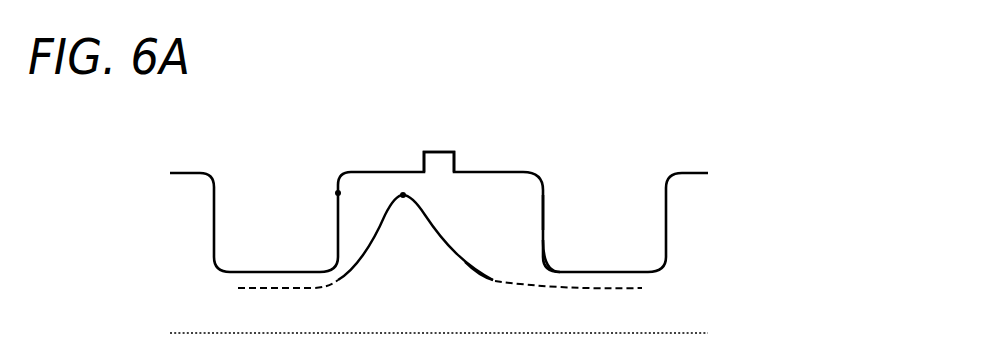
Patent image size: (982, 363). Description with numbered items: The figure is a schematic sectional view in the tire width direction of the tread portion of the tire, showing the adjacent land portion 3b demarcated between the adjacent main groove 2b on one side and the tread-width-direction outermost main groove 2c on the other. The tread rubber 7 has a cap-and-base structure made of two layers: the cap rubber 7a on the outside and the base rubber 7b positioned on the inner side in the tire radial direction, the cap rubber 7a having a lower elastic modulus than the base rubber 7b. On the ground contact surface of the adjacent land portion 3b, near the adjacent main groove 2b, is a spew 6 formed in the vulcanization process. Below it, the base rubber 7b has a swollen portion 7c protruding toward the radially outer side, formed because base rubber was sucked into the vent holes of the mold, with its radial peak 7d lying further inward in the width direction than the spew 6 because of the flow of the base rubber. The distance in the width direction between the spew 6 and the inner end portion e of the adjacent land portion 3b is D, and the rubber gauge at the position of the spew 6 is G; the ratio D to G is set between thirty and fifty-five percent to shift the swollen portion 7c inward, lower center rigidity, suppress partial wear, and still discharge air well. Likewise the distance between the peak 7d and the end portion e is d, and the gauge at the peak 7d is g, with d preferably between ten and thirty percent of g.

The adjacent main groove 2b is at (268, 200).
The tread-width-direction outermost main groove 2c is at (633, 200).
The adjacent land portion 3b is at (516, 185).
The spew 6 is at (440, 151).
The tread rubber 7 is at (600, 183).
The cap rubber 7a is at (523, 216).
The base rubber 7b is at (517, 282).
The swollen portion 7c is at (494, 283).
The peak 7d is at (472, 155).
The end portion e is at (331, 194).
The distance D is at (338, 172).
The distance d is at (338, 265).
The rubber gauge g is at (403, 175).
The rubber gauge G is at (440, 333).